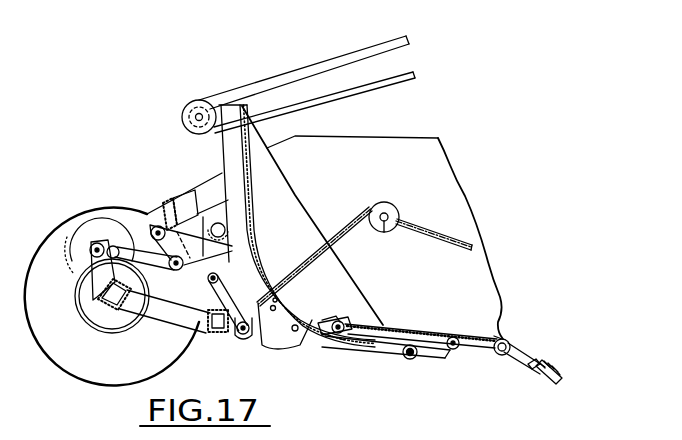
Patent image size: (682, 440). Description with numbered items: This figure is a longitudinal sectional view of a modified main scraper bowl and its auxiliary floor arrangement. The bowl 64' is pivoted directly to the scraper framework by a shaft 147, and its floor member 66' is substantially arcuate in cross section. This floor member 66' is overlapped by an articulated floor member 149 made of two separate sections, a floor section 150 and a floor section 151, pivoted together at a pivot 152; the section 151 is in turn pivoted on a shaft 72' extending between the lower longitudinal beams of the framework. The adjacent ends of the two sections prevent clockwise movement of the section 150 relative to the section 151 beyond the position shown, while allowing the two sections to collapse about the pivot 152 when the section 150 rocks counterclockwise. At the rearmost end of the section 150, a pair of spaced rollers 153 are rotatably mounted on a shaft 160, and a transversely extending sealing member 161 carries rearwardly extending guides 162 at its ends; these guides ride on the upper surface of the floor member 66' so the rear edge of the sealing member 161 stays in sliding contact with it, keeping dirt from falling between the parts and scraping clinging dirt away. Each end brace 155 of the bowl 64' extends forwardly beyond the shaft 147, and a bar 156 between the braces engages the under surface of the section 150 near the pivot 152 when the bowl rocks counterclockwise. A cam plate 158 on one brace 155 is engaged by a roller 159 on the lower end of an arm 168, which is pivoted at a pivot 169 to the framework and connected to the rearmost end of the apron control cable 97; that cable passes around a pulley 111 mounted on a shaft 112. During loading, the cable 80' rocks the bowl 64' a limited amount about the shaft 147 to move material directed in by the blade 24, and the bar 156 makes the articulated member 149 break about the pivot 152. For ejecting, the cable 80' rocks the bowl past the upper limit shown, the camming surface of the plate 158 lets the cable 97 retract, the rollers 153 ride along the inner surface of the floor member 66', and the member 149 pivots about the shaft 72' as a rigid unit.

The cable 80' is at (298, 81).
The floor member 66' is at (297, 226).
The bowl 64' is at (312, 215).
The shaft 112 is at (388, 205).
The pulley 111 is at (382, 233).
The apron control cable 97 is at (458, 243).
The pivot 169 is at (208, 278).
The sealing member 161 is at (327, 315).
The shaft 160 is at (347, 321).
The rollers 153 is at (351, 323).
The floor section 150 is at (400, 328).
The articulated floor member 149 is at (461, 330).
The floor section 151 is at (494, 333).
The shaft 72' is at (531, 349).
The blade 24 is at (562, 374).
The arm 168 is at (220, 333).
The roller 159 is at (246, 338).
The cam plate 158 is at (283, 349).
The end brace 155 is at (378, 352).
The guides 162 is at (338, 343).
The shaft 147 is at (410, 359).
The bar 156 is at (450, 352).
The pivot 152 is at (457, 350).